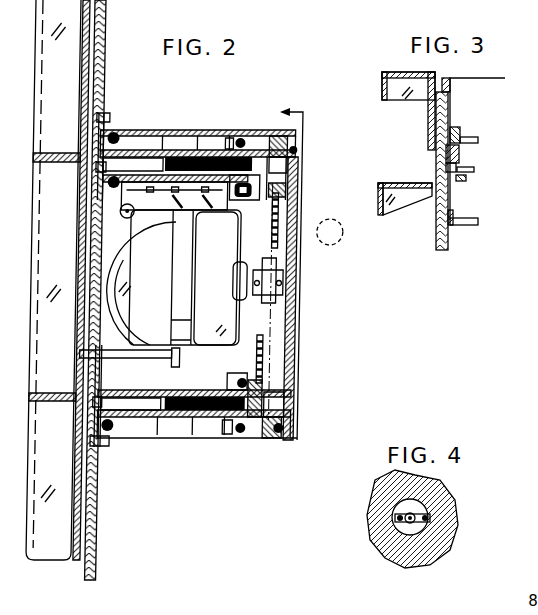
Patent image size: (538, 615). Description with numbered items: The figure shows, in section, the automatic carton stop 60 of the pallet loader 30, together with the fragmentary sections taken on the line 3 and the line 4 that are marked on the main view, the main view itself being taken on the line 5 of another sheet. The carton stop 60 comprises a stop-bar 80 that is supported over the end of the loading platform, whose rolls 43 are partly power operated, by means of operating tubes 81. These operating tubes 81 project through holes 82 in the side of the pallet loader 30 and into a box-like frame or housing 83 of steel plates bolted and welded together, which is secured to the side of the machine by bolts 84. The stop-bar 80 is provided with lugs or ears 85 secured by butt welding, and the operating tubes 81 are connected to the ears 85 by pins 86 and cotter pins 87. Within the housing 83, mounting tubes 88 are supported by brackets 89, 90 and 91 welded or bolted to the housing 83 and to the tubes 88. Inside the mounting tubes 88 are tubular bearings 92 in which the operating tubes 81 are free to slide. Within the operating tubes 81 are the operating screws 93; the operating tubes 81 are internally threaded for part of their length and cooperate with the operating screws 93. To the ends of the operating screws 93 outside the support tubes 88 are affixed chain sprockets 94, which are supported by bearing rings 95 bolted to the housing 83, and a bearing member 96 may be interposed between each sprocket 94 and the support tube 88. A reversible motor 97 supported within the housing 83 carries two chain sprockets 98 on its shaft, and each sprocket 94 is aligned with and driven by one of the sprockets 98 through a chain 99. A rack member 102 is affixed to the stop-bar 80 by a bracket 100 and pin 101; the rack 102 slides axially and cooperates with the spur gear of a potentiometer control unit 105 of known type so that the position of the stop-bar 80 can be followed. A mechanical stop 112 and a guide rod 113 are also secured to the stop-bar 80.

In FIG. 2, the section line 3- 3 is at (40, 162).
In FIG. 2, the section line 4- 4 is at (102, 135).
In FIG. 2, the section line 2-2 of Figure 5 is at (252, 487).
In FIG. 3, the pallet loader 30 is at (446, 251).
In FIG. 2, the rolls 43 is at (347, 243).
In FIG. 2, the carton stop 60 is at (305, 439).
In FIG. 2, the stop-bar 80 is at (72, 556).
In FIG. 3, the stop-bar 80 is at (392, 73).
In FIG. 2, the operating tubes 81 is at (156, 186).
In FIG. 3, the operating tubes 81 is at (460, 155).
In FIG. 4, the operating tubes 81 is at (418, 530).
In FIG. 2, the holes 82 is at (100, 167).
In FIG. 3, the holes 82 is at (432, 186).
In FIG. 4, the holes 82 is at (410, 528).
In FIG. 2, the housing 83 is at (205, 135).
In FIG. 3, the housing 83 is at (470, 224).
In FIG. 2, the bolts 84 is at (110, 117).
In FIG. 3, the ears 85 is at (448, 137).
In FIG. 4, the ears 85 is at (388, 500).
In FIG. 3, the pins 86 is at (445, 154).
In FIG. 4, the pins 86 is at (395, 520).
In FIG. 3, the cotter pins 87 is at (445, 170).
In FIG. 4, the cotter pins 87 is at (430, 517).
In FIG. 2, the mounting tubes 88 is at (188, 150).
In FIG. 2, the bracket 89 is at (235, 137).
In FIG. 2, the bracket 90 is at (244, 137).
In FIG. 2, the bracket 91 is at (112, 120).
In FIG. 2, the tubular bearings 92 is at (170, 148).
In FIG. 2, the operating screws 93 is at (175, 184).
In FIG. 2, the chain sprockets 94 is at (276, 140).
In FIG. 2, the bearing rings 95 is at (297, 150).
In FIG. 2, the bearing member 96 is at (245, 193).
In FIG. 2, the reversible motor 97 is at (211, 327).
In FIG. 2, the chain sprockets 98 is at (272, 238).
In FIG. 2, the chain 99 is at (276, 210).
In FIG. 2, the bracket 100 is at (97, 206).
In FIG. 2, the pin 101 is at (102, 213).
In FIG. 2, the rack member 102 is at (144, 213).
In FIG. 2, the potentiometer control unit 105 is at (128, 233).
In FIG. 2, the mechanical stop 112 is at (184, 353).
In FIG. 2, the guide rod 113 is at (139, 357).